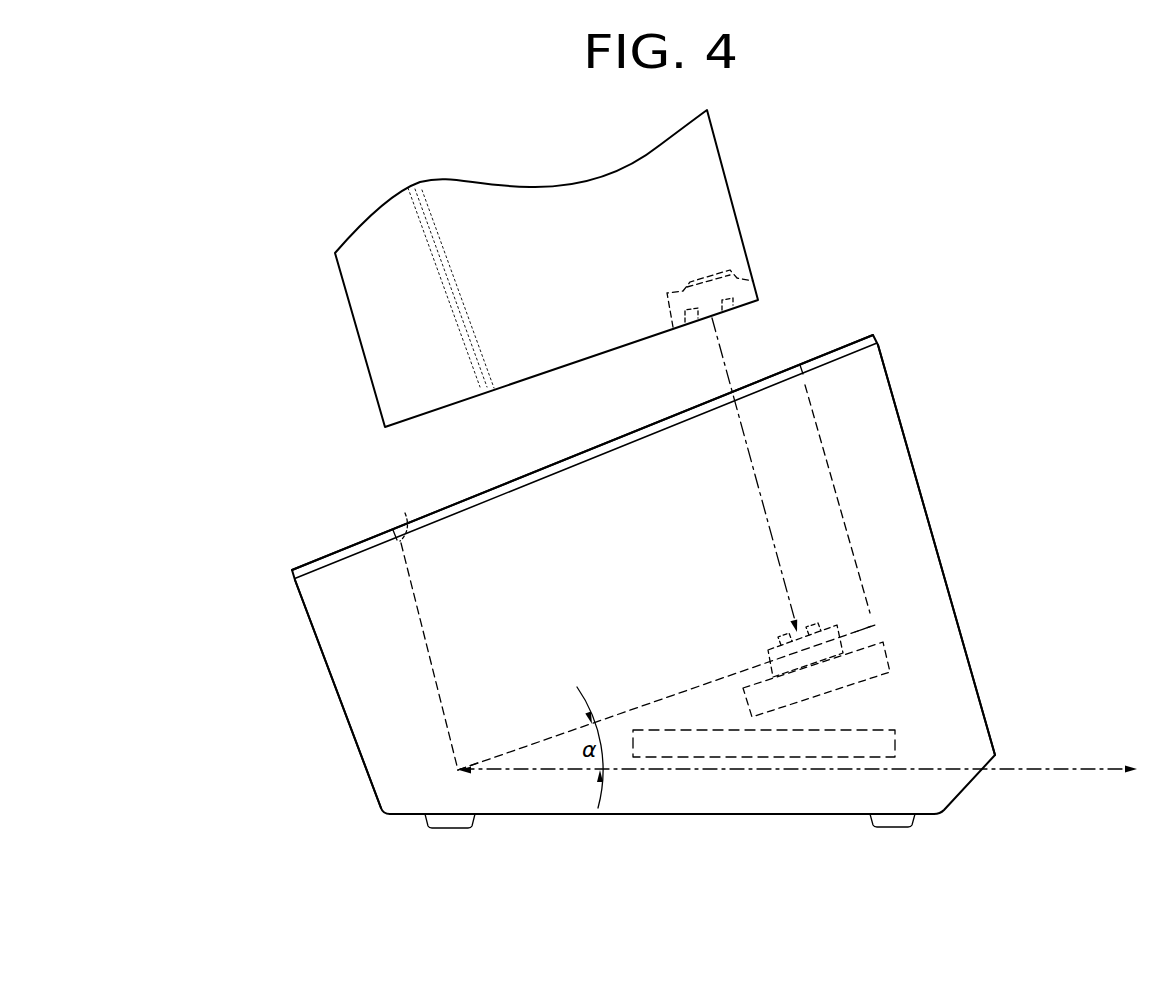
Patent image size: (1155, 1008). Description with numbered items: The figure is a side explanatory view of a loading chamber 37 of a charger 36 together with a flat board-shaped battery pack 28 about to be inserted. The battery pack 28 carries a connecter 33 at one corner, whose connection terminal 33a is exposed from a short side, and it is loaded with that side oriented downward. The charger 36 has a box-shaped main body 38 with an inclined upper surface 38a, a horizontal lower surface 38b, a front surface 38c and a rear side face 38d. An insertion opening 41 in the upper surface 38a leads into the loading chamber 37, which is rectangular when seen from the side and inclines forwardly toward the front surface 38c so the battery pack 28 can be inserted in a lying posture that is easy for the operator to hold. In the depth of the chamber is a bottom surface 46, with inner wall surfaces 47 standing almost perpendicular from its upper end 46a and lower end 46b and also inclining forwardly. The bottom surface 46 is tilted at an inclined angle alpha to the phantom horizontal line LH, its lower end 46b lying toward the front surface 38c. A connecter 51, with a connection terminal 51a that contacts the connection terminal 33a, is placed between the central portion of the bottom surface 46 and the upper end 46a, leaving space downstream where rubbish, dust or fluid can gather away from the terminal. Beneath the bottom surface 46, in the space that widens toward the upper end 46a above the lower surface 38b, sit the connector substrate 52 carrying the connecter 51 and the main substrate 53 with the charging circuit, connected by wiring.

The battery pack 28 is at (723, 156).
The connecter 33 is at (755, 280).
The connection terminal 33a is at (720, 296).
The charger 36 is at (232, 465).
The loading chamber 37 is at (818, 415).
The main body 38 is at (972, 610).
The upper surface 38a is at (308, 563).
The lower surface 38b is at (675, 815).
The front surface 38c is at (338, 700).
The housing right side face 38d is at (930, 518).
The insertion opening 41 is at (407, 522).
The bottom surface 46 is at (533, 745).
The upper end 46a is at (877, 620).
The lower end 46b is at (458, 770).
The inner wall surface 47 is at (413, 623).
The connecter 51 is at (768, 655).
The connection terminal 51a is at (795, 652).
The connector substrate 52 is at (885, 645).
The main substrate 53 is at (888, 726).
The phantom horizontal line LH is at (1065, 772).